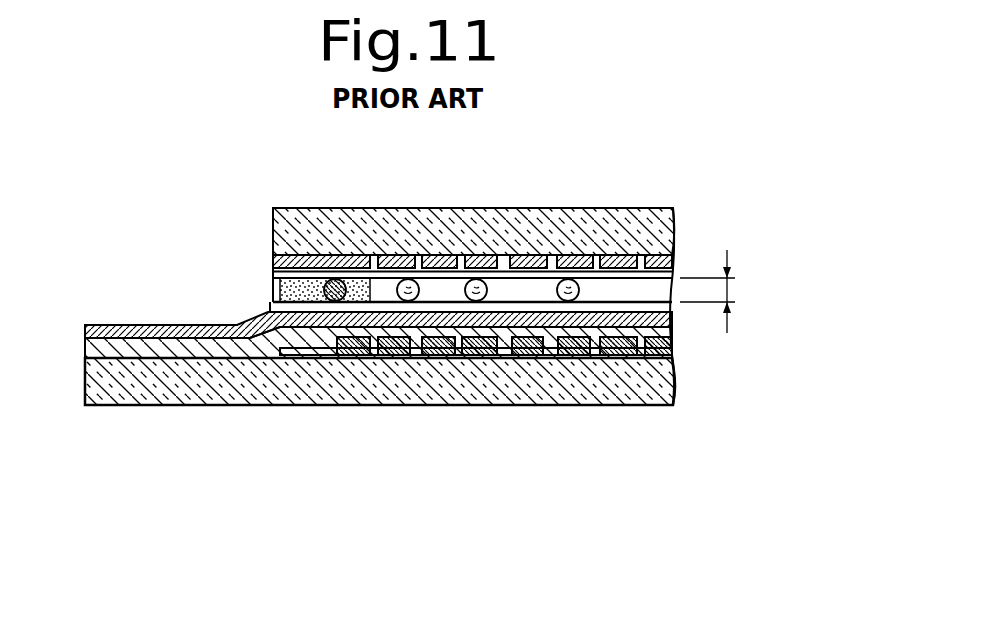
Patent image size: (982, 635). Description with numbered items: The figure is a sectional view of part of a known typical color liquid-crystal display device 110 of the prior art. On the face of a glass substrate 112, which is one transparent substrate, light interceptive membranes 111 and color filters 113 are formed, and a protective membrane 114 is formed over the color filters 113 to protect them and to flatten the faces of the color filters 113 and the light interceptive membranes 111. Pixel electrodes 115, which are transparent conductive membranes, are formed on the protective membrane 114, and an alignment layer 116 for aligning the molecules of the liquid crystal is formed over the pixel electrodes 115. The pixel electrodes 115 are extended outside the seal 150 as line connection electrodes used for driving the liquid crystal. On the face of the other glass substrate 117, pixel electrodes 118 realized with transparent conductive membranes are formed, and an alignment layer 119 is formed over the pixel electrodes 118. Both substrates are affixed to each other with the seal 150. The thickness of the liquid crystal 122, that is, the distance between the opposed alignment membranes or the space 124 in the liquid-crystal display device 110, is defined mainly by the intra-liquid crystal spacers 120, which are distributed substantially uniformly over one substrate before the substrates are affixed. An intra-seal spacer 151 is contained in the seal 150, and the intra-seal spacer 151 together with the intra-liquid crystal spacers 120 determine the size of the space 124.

The liquid-crystal display device 110 is at (605, 175).
The light interceptive membranes 111 is at (468, 354).
The glass substrate 112 is at (368, 375).
The color filters 113 is at (480, 354).
The protective membrane 114 is at (196, 345).
The pixel electrodes 115 is at (113, 330).
The alignment layer 116 is at (311, 308).
The glass substrate 117 is at (406, 232).
The pixel electrodes 118 is at (618, 254).
The alignment layer 119 is at (467, 272).
The intra-liquid crystal spacers 120 is at (496, 275).
The liquid crystal 122 is at (637, 292).
The space 124 is at (729, 290).
The seal 150 is at (277, 293).
The intra-seal spacer 151 is at (333, 280).